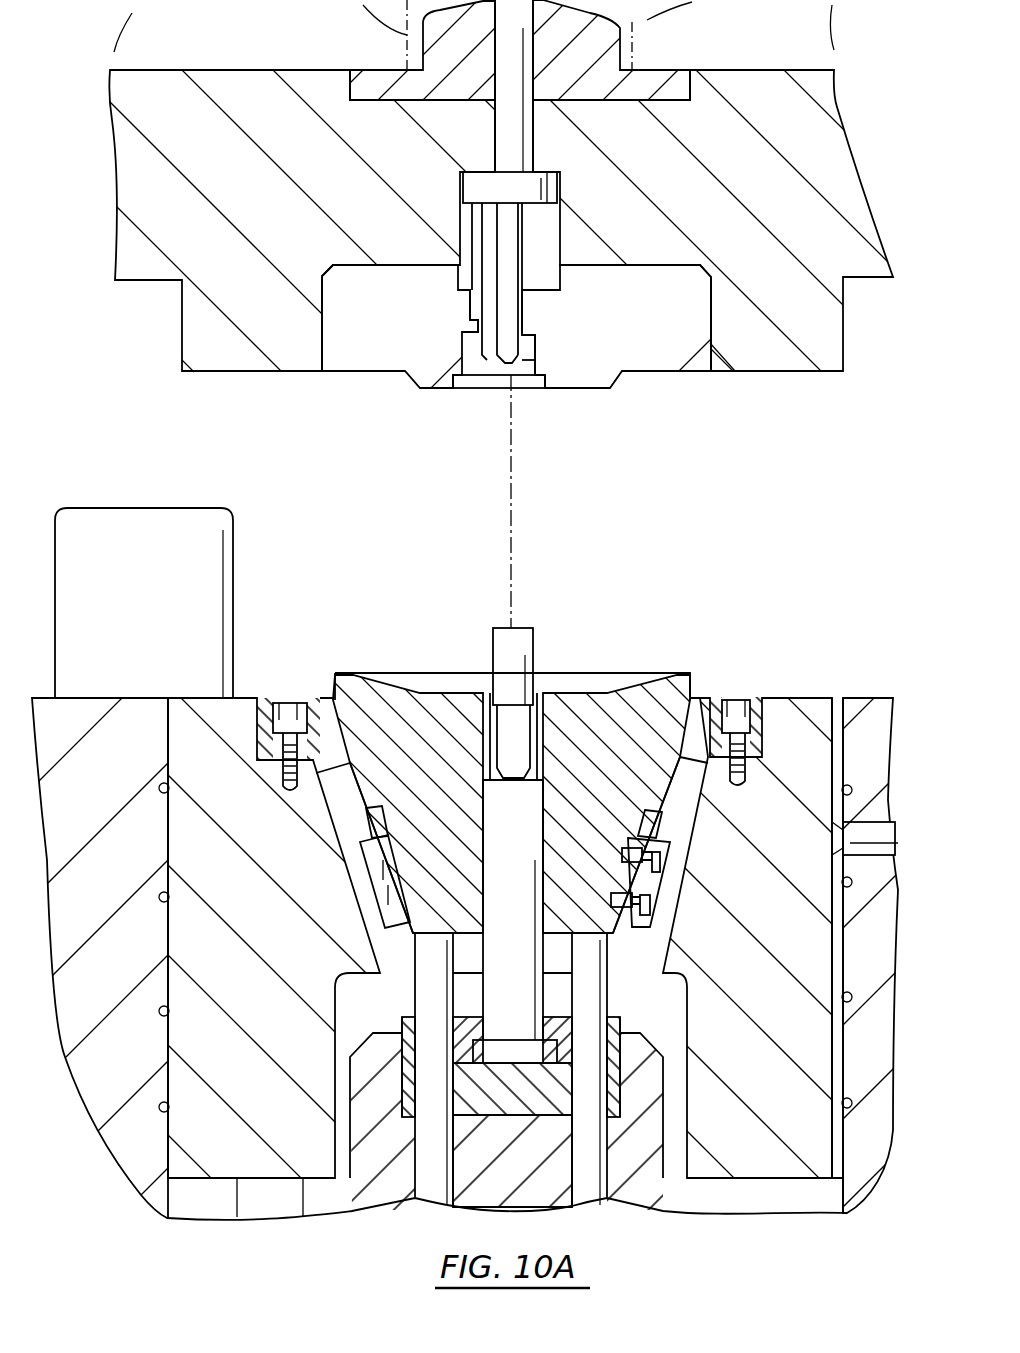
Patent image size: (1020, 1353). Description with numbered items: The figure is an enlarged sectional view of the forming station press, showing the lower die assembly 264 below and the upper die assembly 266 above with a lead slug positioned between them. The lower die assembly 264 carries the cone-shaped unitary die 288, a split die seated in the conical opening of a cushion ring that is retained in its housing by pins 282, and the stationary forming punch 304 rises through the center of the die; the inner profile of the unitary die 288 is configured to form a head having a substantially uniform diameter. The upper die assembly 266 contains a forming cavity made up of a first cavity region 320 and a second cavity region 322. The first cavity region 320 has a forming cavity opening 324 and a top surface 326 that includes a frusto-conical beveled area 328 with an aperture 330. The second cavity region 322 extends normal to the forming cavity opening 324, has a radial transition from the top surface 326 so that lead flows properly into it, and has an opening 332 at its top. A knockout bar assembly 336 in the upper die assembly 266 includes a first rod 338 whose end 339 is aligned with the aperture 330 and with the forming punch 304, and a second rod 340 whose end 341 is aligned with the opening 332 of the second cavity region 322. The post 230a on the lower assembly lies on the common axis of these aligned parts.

The drive post 230a is at (537, 628).
The lower die assembly 264 is at (510, 904).
The upper die assembly 266 is at (510, 228).
The pins 282 is at (871, 843).
The unitary die 288 is at (667, 675).
The forming punch 304 is at (500, 802).
The first cavity region 320 is at (531, 366).
The second cavity region 322 is at (460, 342).
The forming cavity opening 324 is at (477, 387).
The top surface 326 is at (533, 353).
The frusto-conical beveled area 328 is at (513, 355).
The aperture 330 is at (510, 366).
The opening 332 is at (463, 328).
The knockout bar assembly 336 is at (542, 181).
The first rod 338 is at (515, 227).
The end 339 is at (518, 343).
The second rod 340 is at (470, 212).
The end 341 is at (477, 315).